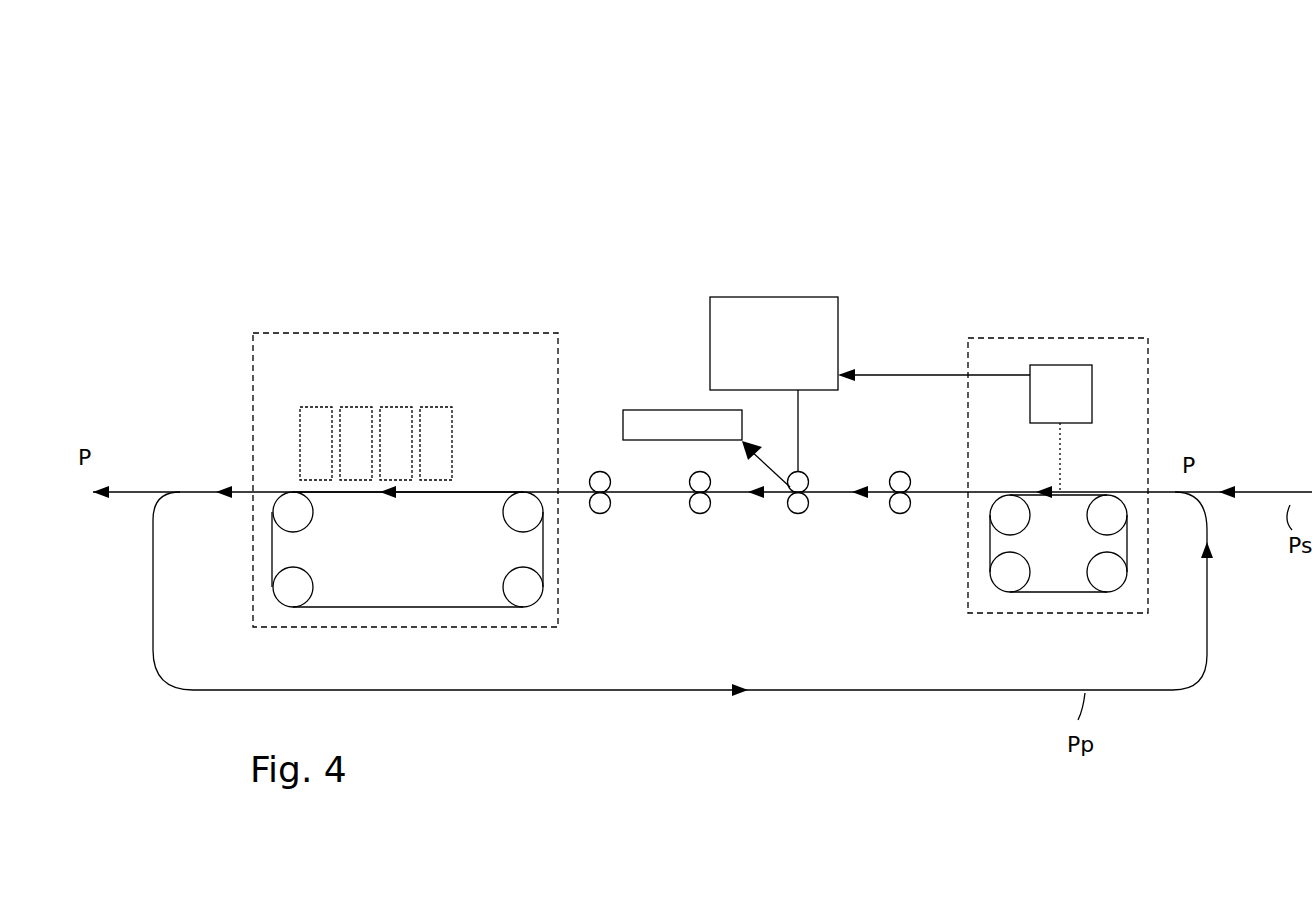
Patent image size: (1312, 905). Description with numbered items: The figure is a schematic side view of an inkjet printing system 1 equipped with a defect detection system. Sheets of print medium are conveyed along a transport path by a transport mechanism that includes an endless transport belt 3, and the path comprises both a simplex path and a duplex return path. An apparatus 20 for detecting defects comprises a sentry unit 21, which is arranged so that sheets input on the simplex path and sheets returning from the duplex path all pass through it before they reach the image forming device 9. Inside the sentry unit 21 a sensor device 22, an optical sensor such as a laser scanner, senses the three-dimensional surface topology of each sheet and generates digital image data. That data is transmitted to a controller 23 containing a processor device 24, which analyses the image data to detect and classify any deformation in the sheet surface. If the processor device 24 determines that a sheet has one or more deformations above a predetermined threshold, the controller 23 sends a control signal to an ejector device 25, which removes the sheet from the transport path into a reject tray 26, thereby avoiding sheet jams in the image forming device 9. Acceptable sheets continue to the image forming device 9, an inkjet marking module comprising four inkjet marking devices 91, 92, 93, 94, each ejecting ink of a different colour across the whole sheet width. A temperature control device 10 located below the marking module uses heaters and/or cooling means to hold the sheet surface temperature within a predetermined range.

The printing system 1 is at (298, 140).
The transport belt 3 is at (950, 497).
The image forming device 9 is at (405, 453).
The temperature control device 10 is at (407, 549).
The inkjet marking device 91 is at (313, 407).
The inkjet marking device 92 is at (352, 407).
The inkjet marking device 93 is at (395, 412).
The inkjet marking device 94 is at (445, 412).
The apparatus for detecting defects 20 is at (750, 327).
The sentry unit 21 is at (993, 443).
The sensor device 22 is at (965, 428).
The controller 23 is at (774, 318).
The processor device 24 is at (774, 343).
The ejector device 25 is at (810, 475).
The reject tray 26 is at (706, 448).